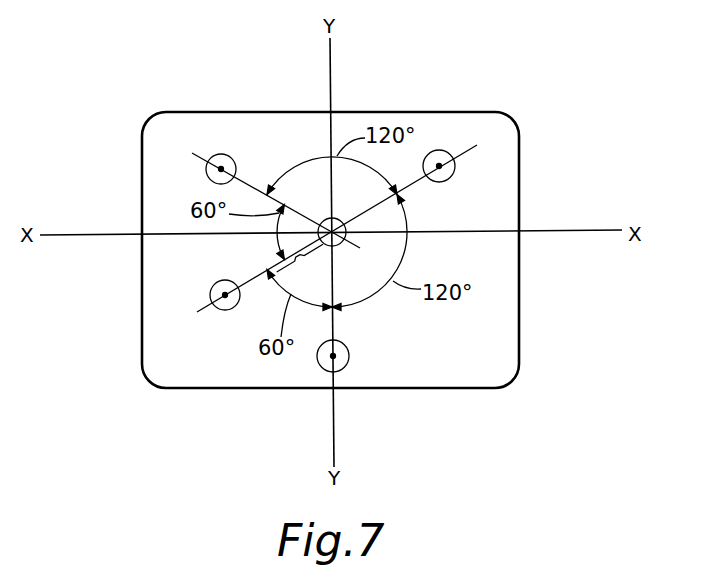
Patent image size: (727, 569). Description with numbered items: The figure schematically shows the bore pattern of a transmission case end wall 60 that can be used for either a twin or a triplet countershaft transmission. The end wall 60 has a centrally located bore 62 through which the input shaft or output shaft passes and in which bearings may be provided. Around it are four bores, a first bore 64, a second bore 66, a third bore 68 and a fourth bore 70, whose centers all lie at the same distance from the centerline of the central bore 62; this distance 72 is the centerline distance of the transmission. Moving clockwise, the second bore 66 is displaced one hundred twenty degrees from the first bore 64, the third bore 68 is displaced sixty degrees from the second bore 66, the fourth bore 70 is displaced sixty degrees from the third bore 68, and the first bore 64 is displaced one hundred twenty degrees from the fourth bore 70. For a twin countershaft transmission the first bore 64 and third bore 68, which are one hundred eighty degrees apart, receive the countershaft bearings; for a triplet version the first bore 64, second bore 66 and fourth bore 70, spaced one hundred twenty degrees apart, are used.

The end wall 60 is at (494, 96).
The centrally located bore 62 is at (342, 244).
The first bore 64 is at (438, 150).
The second bore 66 is at (346, 366).
The third bore 68 is at (221, 310).
The fourth bore 70 is at (223, 154).
The centerline distance 72 is at (273, 278).